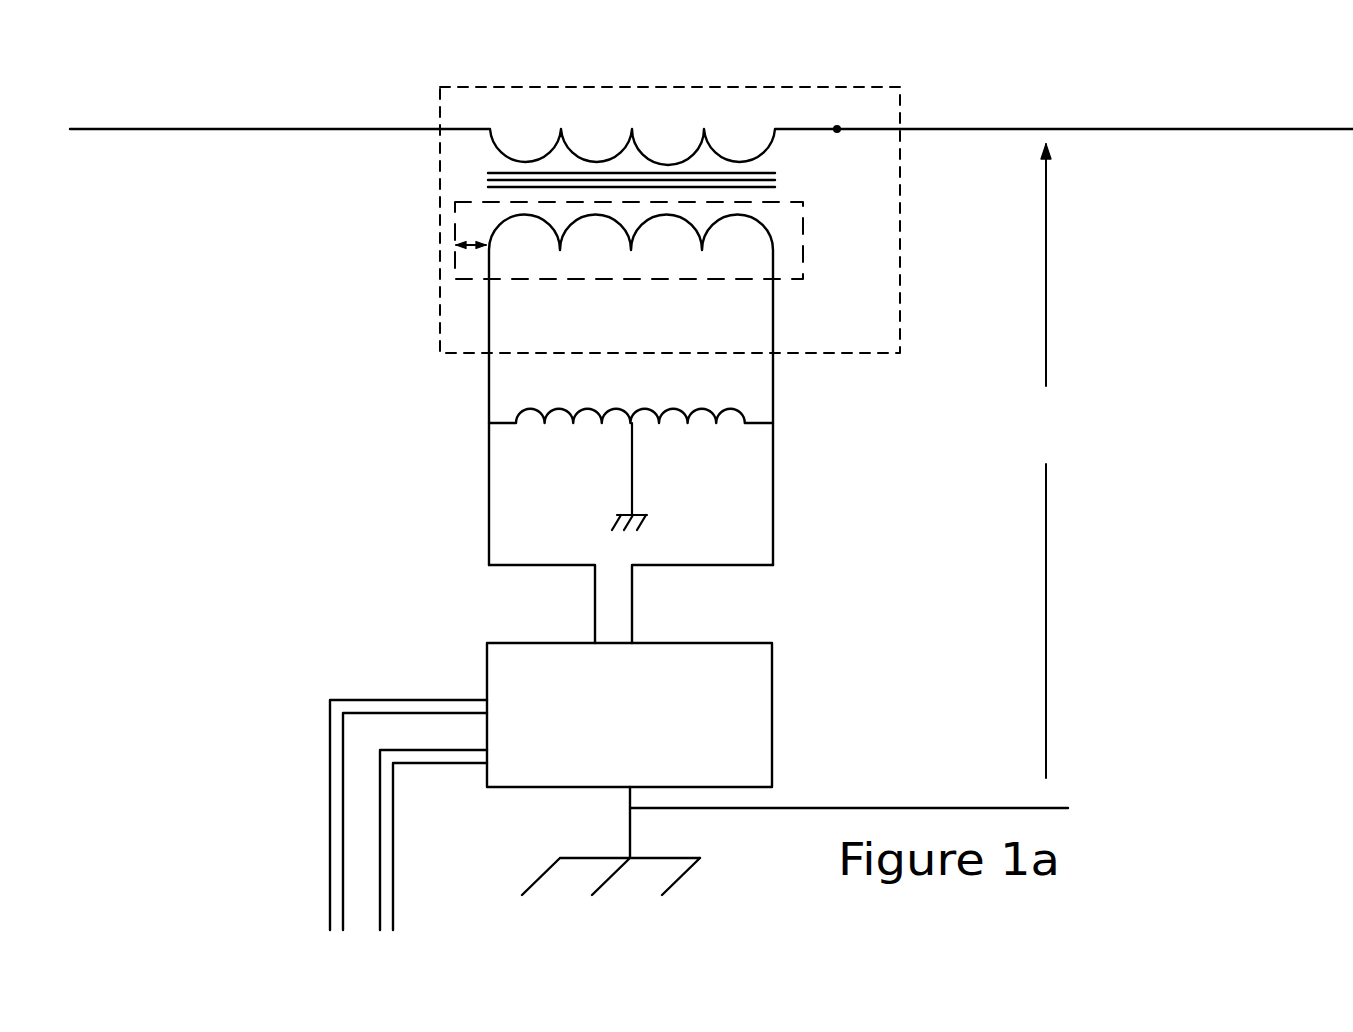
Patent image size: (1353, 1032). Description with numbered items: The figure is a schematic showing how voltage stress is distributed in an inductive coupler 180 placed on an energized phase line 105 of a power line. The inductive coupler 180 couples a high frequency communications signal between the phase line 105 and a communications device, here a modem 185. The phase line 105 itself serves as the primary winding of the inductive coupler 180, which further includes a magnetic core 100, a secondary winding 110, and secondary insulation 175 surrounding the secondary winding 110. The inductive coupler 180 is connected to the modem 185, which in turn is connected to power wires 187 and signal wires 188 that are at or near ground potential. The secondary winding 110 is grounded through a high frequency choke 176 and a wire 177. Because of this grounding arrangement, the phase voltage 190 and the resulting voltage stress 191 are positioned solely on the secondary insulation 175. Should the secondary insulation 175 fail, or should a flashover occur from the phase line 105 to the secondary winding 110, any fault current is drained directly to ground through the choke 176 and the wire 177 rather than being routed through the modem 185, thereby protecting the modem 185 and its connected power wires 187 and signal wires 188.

The magnetic core 100 is at (470, 178).
The phase line 105 is at (546, 146).
The secondary winding 110 is at (583, 238).
The secondary insulation 175 is at (445, 221).
The high frequency choke 176 is at (725, 403).
The wire 177 is at (645, 490).
The inductive coupler 180 is at (735, 82).
The modem 185 is at (782, 705).
The power wires 187 is at (320, 730).
The signal wires 188 is at (372, 798).
The phase voltage 190 is at (1044, 461).
The voltage stress 191 is at (470, 250).